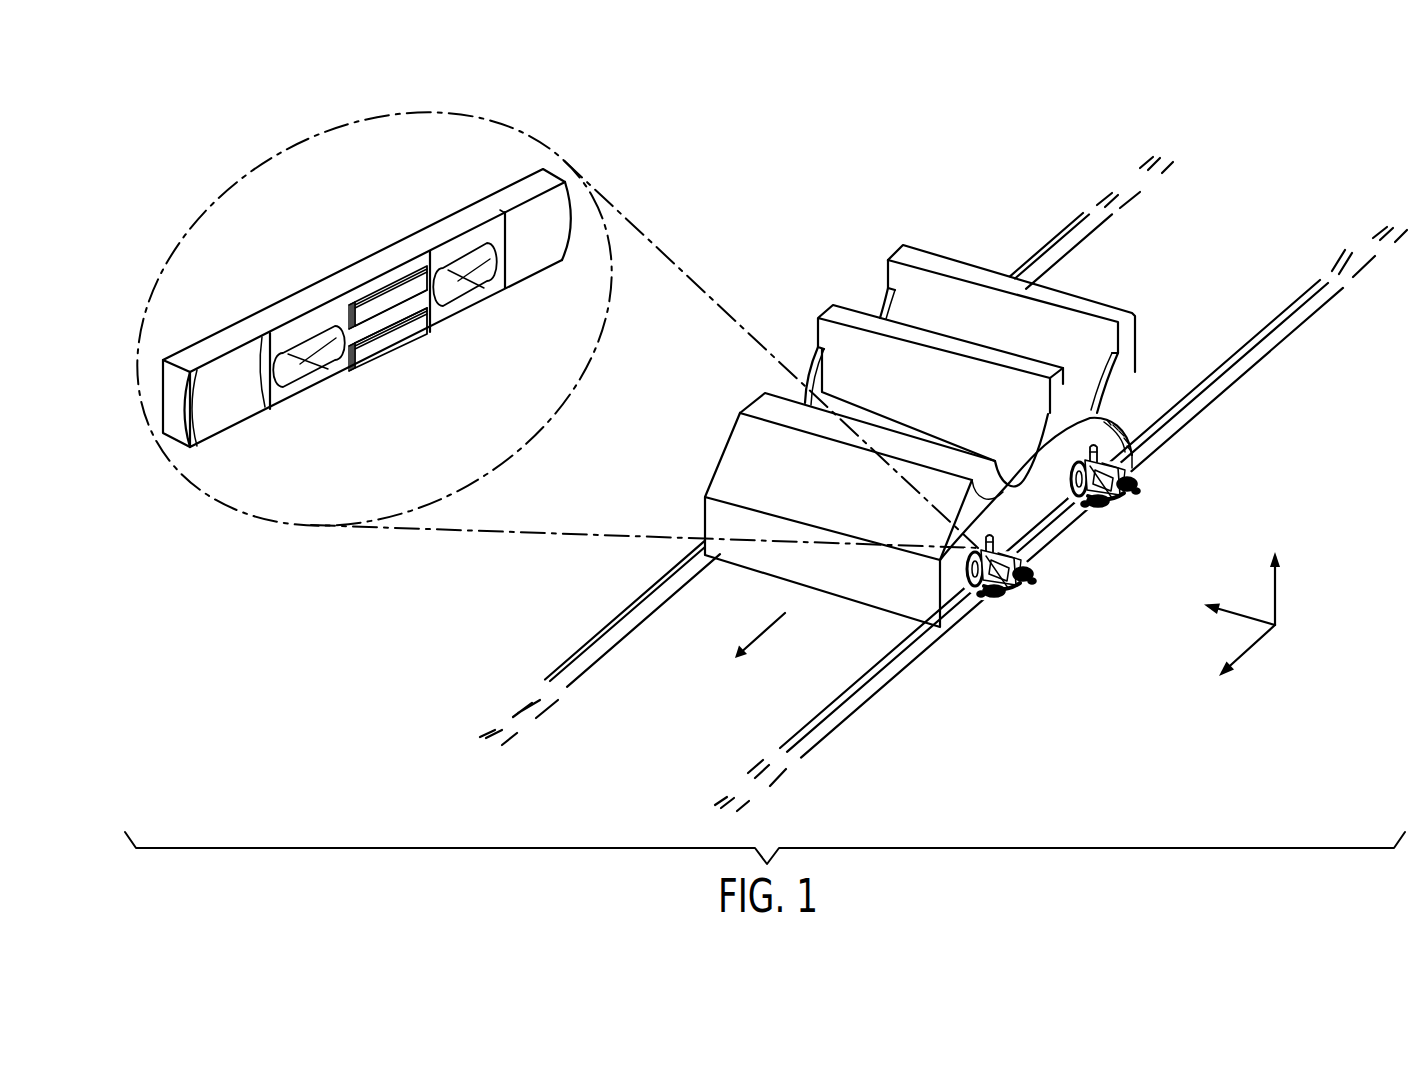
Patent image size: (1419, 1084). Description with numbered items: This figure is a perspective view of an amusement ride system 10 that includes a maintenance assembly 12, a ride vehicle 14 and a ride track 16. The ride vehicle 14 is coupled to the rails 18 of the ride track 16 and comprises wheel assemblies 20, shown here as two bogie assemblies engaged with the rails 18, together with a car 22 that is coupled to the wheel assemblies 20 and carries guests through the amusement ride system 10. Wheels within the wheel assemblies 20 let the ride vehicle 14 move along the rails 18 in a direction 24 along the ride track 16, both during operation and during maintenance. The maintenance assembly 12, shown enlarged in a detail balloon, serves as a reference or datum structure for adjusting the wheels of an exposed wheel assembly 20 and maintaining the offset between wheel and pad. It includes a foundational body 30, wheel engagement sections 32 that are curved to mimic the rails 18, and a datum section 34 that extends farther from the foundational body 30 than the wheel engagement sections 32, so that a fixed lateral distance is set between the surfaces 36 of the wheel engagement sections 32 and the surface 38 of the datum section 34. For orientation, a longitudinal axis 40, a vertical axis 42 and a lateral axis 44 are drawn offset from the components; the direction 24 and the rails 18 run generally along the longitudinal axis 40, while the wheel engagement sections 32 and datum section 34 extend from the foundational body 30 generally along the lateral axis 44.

The amusement ride system 10 is at (622, 112).
The maintenance assembly 12 is at (271, 281).
The ride vehicle 14 is at (854, 274).
The ride track 16 is at (895, 691).
The rails 18 is at (600, 657).
The wheel assemblies 20 is at (1136, 516).
The car 22 is at (943, 260).
The direction 24 is at (763, 633).
The foundational body 30 is at (414, 230).
The wheel engagement sections 32 is at (537, 280).
The datum section 34 is at (416, 354).
The surfaces 36 is at (228, 361).
The surface 38 is at (380, 297).
The longitudinal axis 40 is at (1250, 645).
The vertical axis 42 is at (1276, 597).
The lateral axis 44 is at (1247, 618).